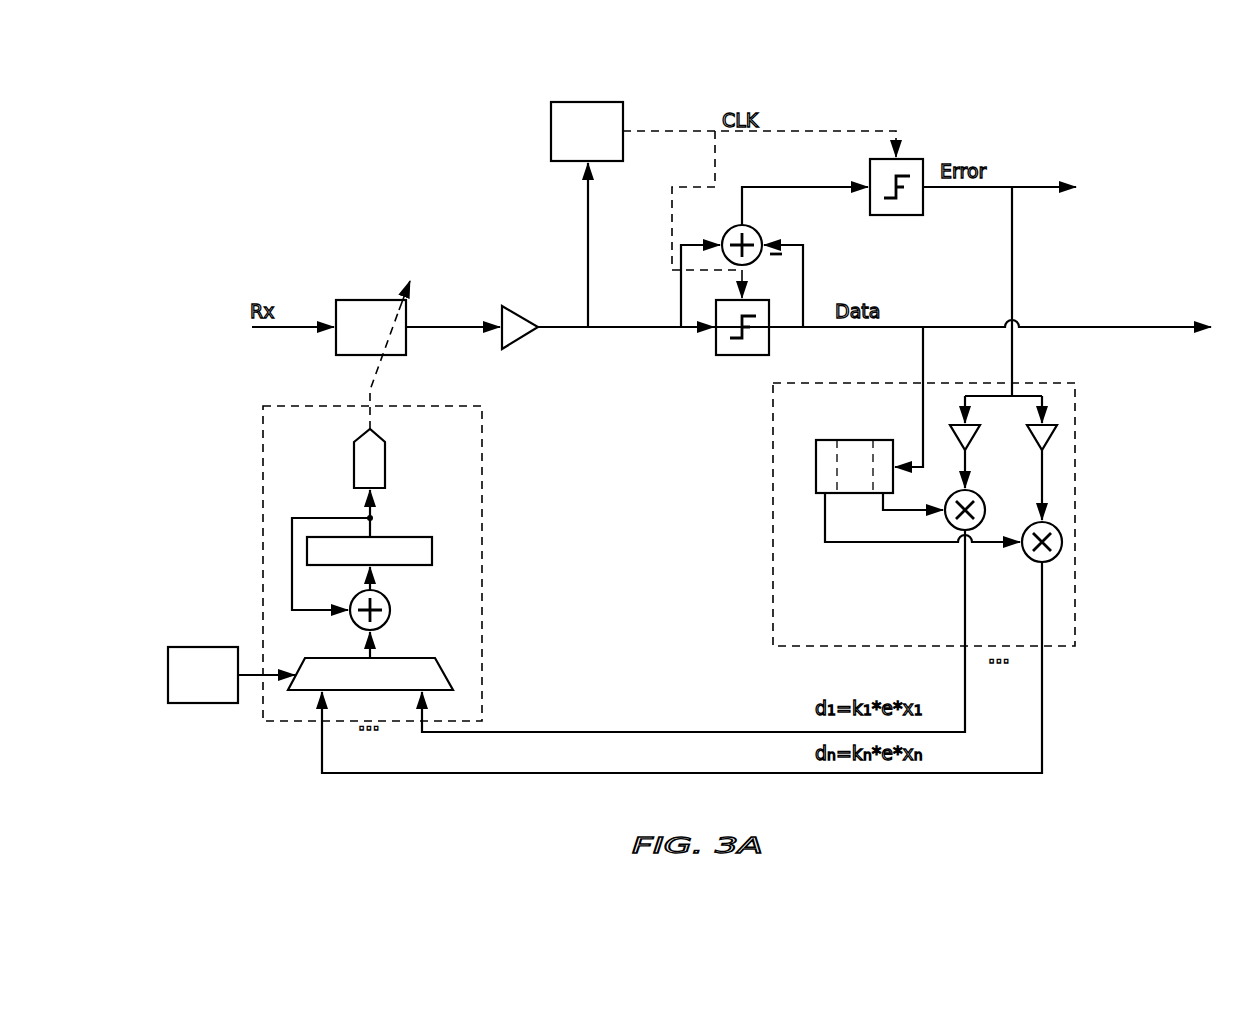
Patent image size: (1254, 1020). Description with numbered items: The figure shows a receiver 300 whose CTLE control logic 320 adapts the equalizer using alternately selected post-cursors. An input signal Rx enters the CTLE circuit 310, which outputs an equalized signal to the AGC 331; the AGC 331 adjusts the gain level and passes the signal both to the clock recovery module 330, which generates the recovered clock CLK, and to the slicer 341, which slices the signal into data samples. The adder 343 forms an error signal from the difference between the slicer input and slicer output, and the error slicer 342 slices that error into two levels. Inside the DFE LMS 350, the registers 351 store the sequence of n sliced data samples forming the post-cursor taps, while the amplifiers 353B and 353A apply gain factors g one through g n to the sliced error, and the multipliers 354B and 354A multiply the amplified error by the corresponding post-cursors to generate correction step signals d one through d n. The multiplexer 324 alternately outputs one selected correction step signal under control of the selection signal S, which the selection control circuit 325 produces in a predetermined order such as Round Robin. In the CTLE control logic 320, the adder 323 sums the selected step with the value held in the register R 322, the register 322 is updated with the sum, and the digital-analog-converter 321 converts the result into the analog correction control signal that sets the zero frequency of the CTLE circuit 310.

The receiver 300 is at (256, 143).
The CTLE circuit 310 is at (367, 299).
The CTLE control logic 320 is at (416, 563).
The digital-analog-converter 321 is at (354, 453).
The register R 322 is at (402, 537).
The adder 323 is at (390, 603).
The multiplexer 324 is at (450, 673).
The selection control circuit 325 is at (202, 647).
The clock recovery module 330 is at (607, 102).
The AGC 331 is at (518, 307).
The slicer 341 is at (769, 338).
The error slicer 342 is at (915, 159).
The adder 343 is at (755, 227).
The DFE LMS 350 is at (976, 494).
The registers 351 is at (865, 440).
The amplifier 353A is at (1050, 423).
The amplifier 353B is at (960, 423).
The multiplier 354A is at (1060, 537).
The multiplier 354B is at (987, 503).